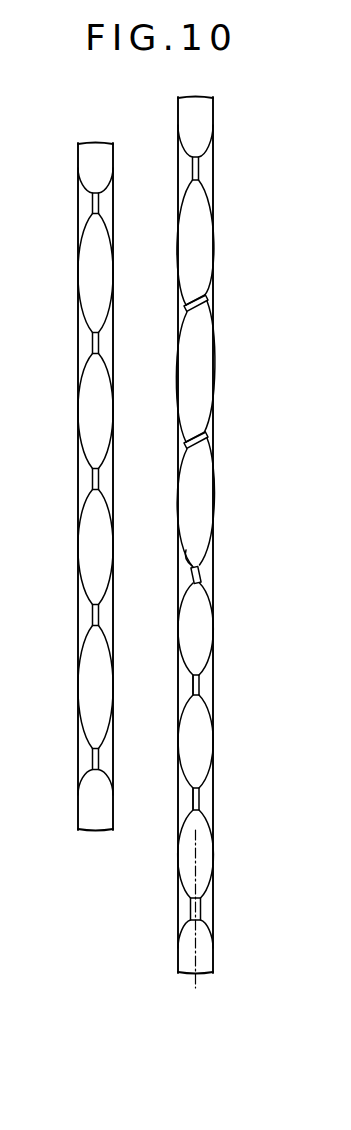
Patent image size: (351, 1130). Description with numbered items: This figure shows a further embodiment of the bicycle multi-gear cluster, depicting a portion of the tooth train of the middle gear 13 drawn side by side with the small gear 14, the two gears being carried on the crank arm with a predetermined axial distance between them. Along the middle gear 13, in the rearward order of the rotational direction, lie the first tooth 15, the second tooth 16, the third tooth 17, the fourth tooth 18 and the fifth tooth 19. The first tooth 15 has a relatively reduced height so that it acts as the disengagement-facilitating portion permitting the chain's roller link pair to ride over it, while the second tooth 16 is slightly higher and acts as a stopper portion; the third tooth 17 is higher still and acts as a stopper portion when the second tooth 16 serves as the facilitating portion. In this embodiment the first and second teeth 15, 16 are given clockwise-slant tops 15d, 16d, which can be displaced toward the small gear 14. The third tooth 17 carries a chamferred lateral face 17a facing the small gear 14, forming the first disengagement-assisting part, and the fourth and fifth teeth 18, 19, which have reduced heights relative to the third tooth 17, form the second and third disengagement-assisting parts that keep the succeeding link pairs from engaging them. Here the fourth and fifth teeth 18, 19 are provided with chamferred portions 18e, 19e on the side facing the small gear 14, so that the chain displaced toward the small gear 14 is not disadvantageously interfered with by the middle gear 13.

The middle gear 13 is at (200, 547).
The small gear 14 is at (62, 160).
The first tooth 15 is at (204, 313).
The clockwise-slant top 15d is at (197, 301).
The second tooth 16 is at (203, 447).
The clockwise-slant top 16d is at (197, 440).
The third tooth 17 is at (203, 575).
The chamferred lateral face 17a is at (184, 549).
The fourth tooth 18 is at (203, 684).
The chamferred portion 18e is at (183, 681).
The fifth tooth 19 is at (203, 800).
The chamferred portion 19e is at (183, 796).